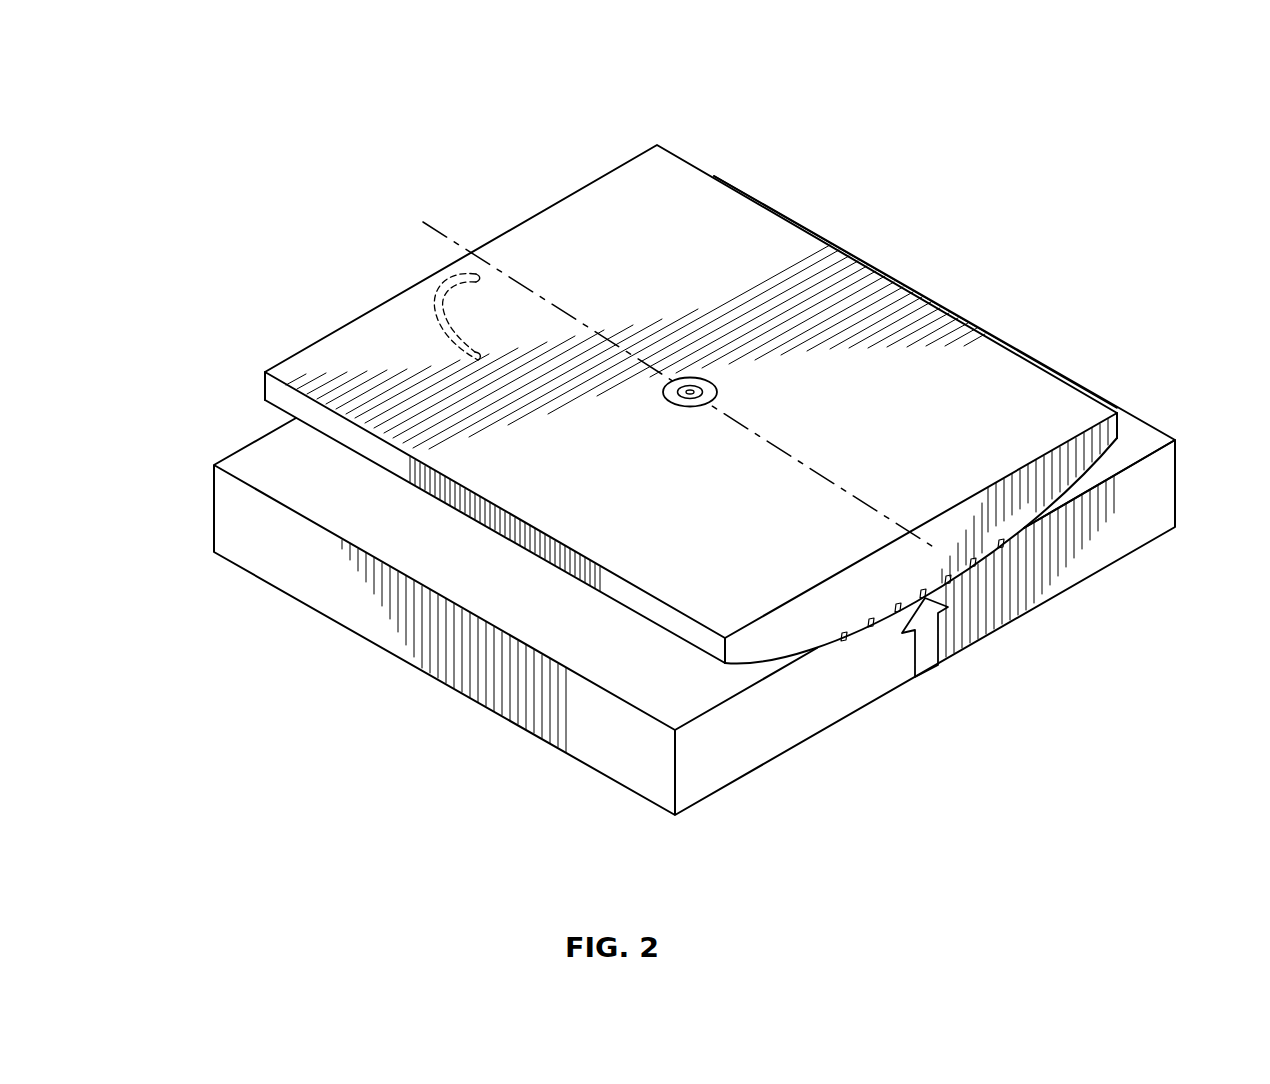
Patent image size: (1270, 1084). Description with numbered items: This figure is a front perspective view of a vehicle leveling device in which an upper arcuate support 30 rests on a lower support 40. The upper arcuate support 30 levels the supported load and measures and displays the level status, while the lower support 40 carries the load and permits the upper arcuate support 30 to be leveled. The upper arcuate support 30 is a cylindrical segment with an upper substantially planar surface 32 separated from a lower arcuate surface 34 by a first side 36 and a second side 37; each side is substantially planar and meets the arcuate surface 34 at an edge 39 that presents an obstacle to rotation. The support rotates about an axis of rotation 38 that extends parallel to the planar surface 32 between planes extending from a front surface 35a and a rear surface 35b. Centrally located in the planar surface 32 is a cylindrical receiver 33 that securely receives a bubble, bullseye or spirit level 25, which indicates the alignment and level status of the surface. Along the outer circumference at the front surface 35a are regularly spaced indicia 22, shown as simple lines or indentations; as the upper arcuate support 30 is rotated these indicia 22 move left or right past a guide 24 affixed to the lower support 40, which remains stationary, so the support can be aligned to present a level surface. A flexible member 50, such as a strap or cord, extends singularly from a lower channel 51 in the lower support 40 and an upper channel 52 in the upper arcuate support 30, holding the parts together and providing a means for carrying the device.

The indicia 22 is at (1000, 547).
The guide 24 is at (930, 668).
The level 25 is at (700, 386).
The upper arcuate support 30 is at (498, 446).
The upper substantially planar surface 32 is at (947, 370).
The cylindrical receiver 33 is at (708, 393).
The lower arcuate surface 34 is at (1100, 448).
The front surface 35a is at (782, 638).
The rear surface 35b is at (363, 316).
The first side 36 is at (280, 394).
The second side 37 is at (668, 155).
The axis of rotation 38 is at (462, 246).
The edge 39 is at (1130, 416).
The lower support 40 is at (426, 676).
The flexible member 50 is at (436, 308).
The lower channel 51 is at (482, 348).
The upper channel 52 is at (470, 278).